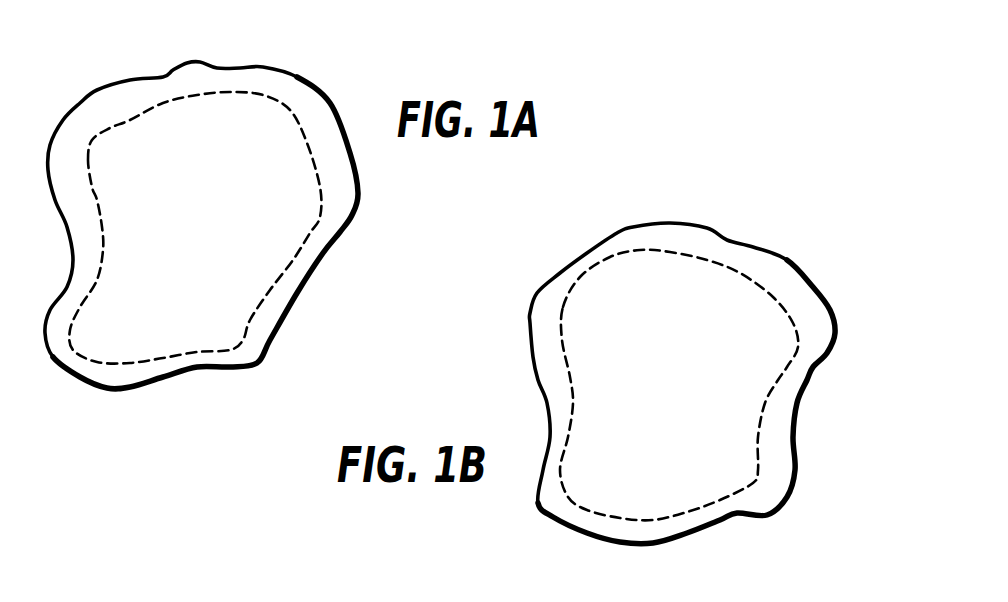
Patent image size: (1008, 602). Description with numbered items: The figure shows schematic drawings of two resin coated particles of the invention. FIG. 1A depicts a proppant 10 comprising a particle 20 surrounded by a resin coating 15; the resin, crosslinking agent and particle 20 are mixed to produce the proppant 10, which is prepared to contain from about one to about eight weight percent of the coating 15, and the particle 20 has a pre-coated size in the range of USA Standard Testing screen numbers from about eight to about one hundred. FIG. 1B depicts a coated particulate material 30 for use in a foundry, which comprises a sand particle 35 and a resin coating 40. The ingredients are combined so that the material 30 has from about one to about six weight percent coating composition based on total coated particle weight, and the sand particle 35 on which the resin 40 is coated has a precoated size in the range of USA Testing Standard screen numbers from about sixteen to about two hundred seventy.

In FIG. 1A, the proppant 10 is at (280, 58).
In FIG. 1A, the resin coating 15 is at (325, 250).
In FIG. 1A, the particle 20 is at (322, 193).
In FIG. 1B, the coated particulate material 30 is at (753, 241).
In FIG. 1B, the sand particle 35 is at (820, 364).
In FIG. 1B, the resin coating 40 is at (792, 324).